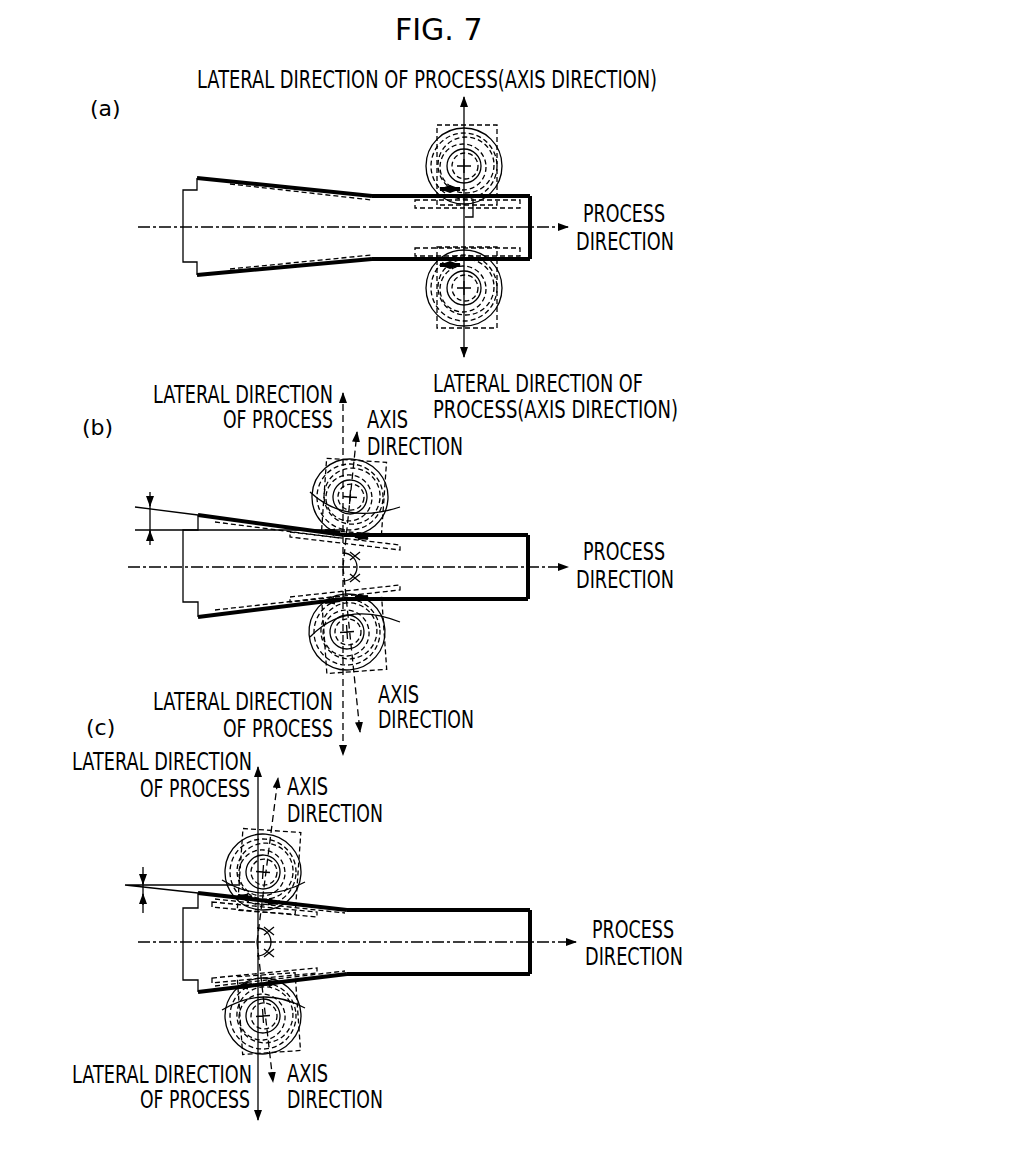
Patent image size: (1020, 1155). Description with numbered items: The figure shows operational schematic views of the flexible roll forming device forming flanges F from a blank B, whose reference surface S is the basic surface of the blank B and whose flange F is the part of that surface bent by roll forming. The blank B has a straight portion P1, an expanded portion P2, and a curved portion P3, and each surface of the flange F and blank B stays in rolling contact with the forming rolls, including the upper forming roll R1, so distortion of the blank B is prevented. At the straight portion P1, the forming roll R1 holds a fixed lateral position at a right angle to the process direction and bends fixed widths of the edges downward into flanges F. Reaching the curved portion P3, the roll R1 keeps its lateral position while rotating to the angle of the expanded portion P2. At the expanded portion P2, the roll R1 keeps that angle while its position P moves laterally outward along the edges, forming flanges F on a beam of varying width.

The flange F is at (212, 273).
The blank B is at (298, 176).
The upper forming roll R1 is at (385, 280).
The reference surface S is at (520, 218).
The position P is at (477, 204).
The straight portion P1 is at (376, 228).
The expanded portion P2 is at (278, 233).
The curved portion P3 is at (357, 268).